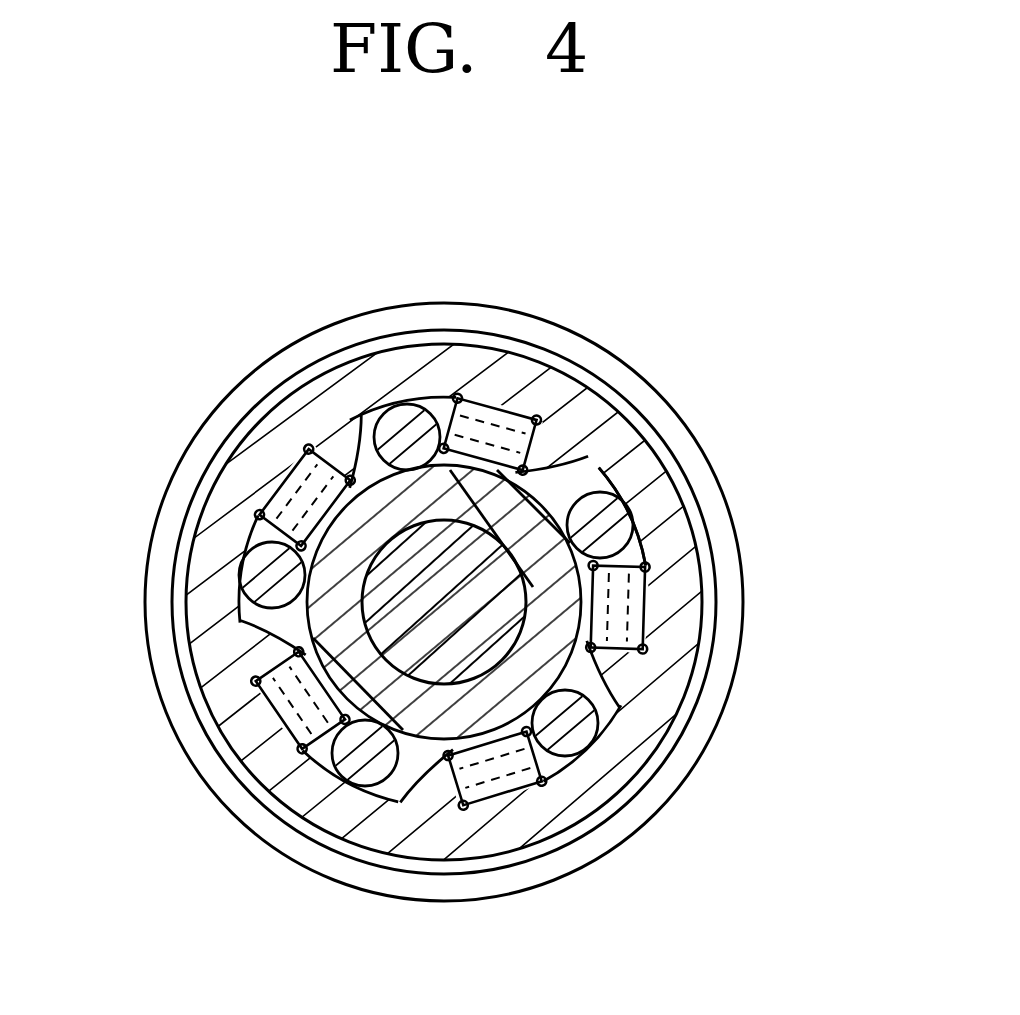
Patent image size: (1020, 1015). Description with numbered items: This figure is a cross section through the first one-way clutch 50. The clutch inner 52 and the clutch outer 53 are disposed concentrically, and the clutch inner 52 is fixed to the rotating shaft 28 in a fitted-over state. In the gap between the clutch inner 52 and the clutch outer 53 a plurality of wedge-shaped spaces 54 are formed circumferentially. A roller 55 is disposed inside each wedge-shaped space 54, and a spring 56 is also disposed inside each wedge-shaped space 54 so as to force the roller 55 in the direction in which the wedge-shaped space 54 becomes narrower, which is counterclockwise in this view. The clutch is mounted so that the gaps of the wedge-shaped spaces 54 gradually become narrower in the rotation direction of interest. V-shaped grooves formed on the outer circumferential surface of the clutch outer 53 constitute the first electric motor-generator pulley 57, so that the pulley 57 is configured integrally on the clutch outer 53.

The first one-way clutch 50 is at (198, 236).
The rotating shaft 28 is at (393, 610).
The clutch inner 52 is at (558, 650).
The clutch outer 53 is at (692, 637).
The first electric motor-generator pulley 57 is at (692, 637).
The wedge-shaped space 54 is at (600, 467).
The roller 55 is at (606, 518).
The spring 56 is at (633, 602).